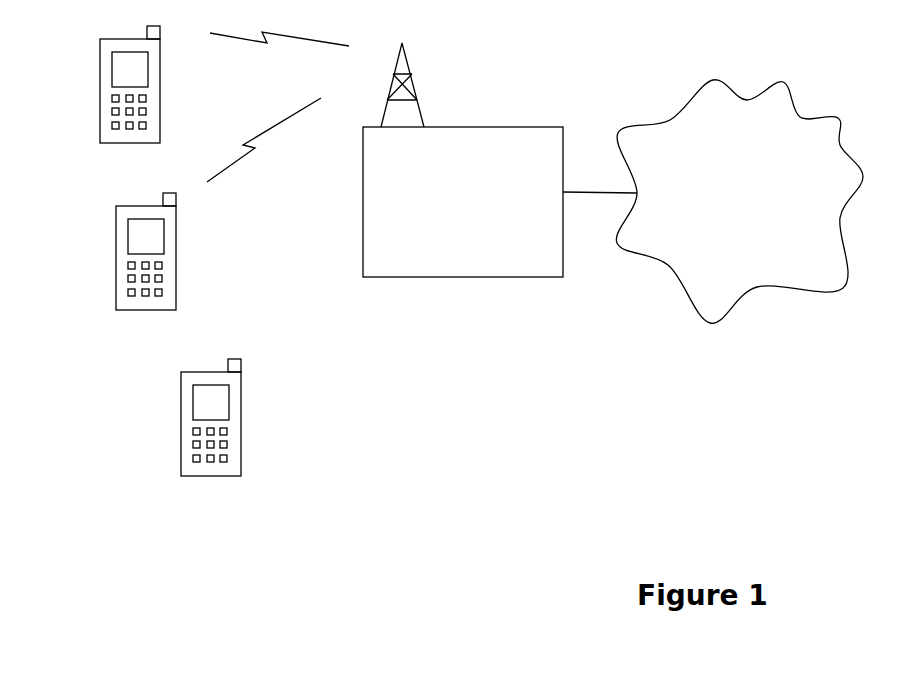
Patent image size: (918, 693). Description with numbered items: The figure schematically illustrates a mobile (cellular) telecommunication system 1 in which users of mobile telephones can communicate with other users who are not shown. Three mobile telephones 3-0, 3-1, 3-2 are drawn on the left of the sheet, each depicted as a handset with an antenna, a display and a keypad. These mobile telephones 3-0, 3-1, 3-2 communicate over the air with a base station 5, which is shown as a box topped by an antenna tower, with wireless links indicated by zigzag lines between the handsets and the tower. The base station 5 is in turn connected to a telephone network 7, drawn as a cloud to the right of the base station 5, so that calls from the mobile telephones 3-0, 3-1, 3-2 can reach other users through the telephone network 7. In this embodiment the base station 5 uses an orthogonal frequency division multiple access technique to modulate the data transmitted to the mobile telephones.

The mobile telephone 3-0 is at (97, 108).
The mobile telephone 3-1 is at (113, 293).
The mobile telephone 3-2 is at (177, 443).
The base station 5 is at (493, 127).
The telephone network 7 is at (725, 82).
The mobile telecommunication system 1 is at (513, 327).